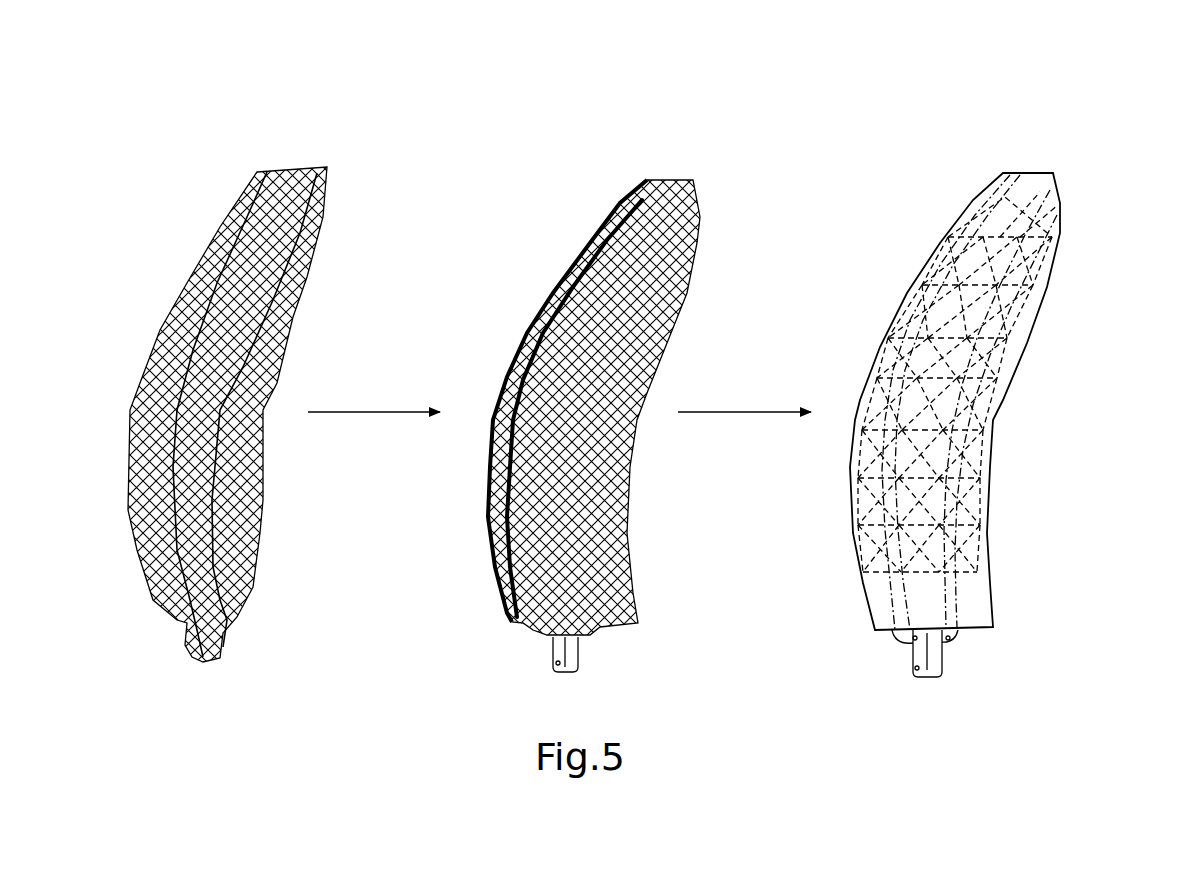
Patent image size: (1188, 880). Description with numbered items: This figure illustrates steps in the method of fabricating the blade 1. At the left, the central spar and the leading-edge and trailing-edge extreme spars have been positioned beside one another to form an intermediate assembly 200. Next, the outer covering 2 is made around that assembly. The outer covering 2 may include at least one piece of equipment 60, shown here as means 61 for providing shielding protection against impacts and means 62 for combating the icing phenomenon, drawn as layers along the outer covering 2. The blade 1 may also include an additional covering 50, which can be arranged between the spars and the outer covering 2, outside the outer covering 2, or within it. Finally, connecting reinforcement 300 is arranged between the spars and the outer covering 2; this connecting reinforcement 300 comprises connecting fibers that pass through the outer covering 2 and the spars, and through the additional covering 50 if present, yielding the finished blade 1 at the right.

The blade 1 is at (1008, 353).
The outer covering 2 is at (623, 378).
The additional covering 50 is at (658, 426).
The piece of equipment 60 is at (724, 272).
The means for providing shielding protection against impacts 61 is at (530, 313).
The means for combating the icing phenomenon 62 is at (578, 262).
The intermediate assembly 200 is at (265, 262).
The connecting reinforcement 300 is at (1037, 252).